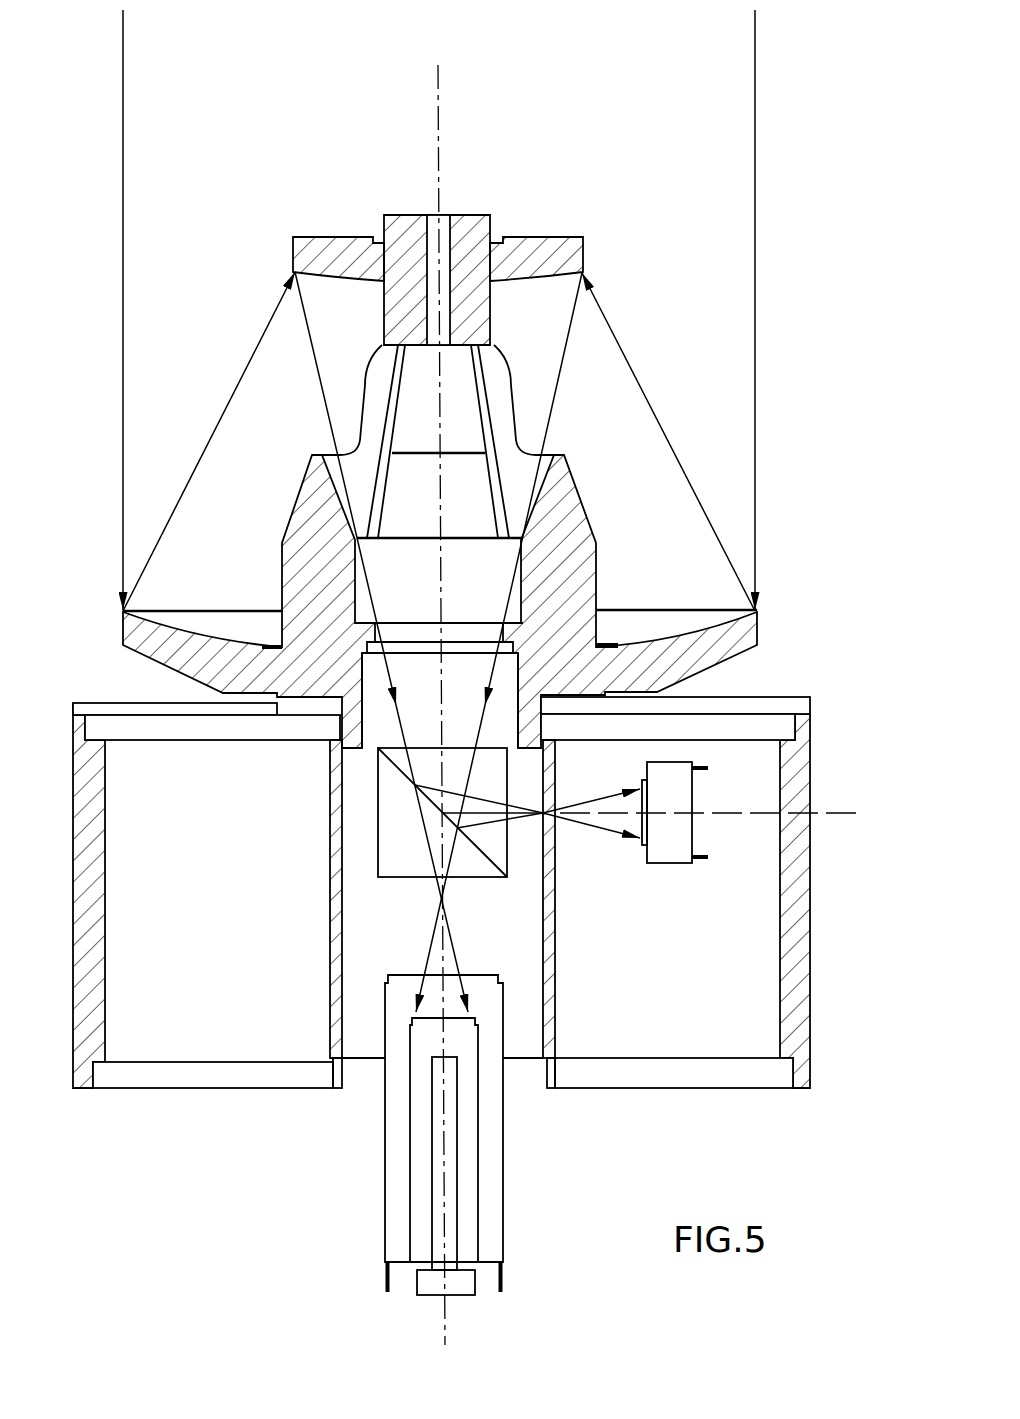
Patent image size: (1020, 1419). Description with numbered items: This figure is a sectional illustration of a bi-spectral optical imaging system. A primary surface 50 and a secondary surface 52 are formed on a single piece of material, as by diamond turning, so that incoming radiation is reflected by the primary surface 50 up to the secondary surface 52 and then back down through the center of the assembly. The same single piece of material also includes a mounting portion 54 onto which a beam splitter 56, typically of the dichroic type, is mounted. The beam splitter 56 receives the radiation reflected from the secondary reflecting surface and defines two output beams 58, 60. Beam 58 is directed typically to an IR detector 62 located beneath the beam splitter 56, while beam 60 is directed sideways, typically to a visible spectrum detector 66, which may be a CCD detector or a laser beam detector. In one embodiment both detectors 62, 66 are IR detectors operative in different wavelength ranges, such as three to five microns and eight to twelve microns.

The primary surface 50 is at (230, 640).
The secondary surface 52 is at (542, 283).
The mounting portion 54 is at (148, 1133).
The beam splitter 56 is at (407, 880).
The output beam 58 is at (446, 903).
The output beam 60 is at (596, 822).
The IR detector 62 is at (402, 1158).
The visible spectrum detector 66 is at (658, 866).